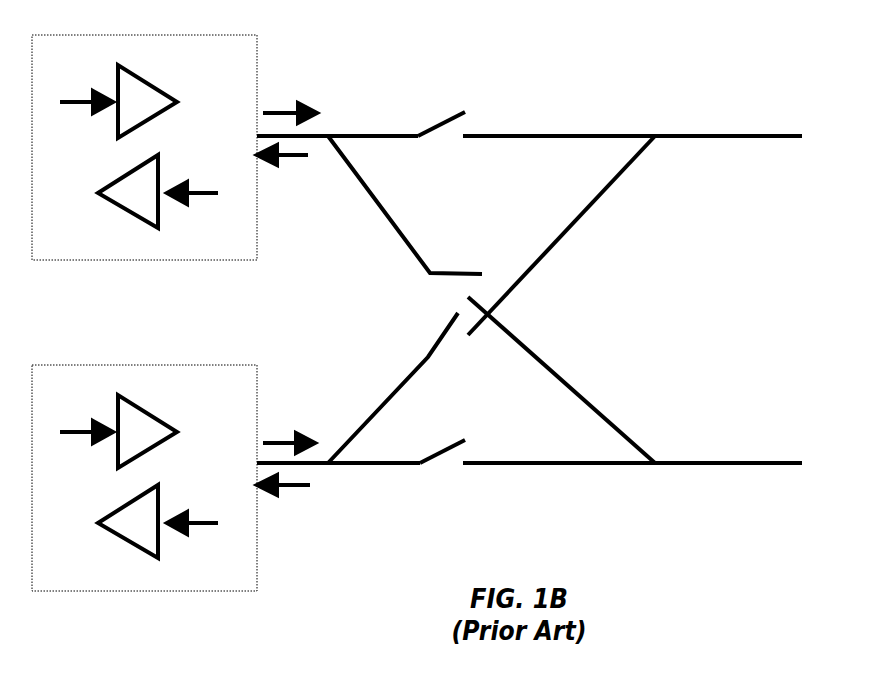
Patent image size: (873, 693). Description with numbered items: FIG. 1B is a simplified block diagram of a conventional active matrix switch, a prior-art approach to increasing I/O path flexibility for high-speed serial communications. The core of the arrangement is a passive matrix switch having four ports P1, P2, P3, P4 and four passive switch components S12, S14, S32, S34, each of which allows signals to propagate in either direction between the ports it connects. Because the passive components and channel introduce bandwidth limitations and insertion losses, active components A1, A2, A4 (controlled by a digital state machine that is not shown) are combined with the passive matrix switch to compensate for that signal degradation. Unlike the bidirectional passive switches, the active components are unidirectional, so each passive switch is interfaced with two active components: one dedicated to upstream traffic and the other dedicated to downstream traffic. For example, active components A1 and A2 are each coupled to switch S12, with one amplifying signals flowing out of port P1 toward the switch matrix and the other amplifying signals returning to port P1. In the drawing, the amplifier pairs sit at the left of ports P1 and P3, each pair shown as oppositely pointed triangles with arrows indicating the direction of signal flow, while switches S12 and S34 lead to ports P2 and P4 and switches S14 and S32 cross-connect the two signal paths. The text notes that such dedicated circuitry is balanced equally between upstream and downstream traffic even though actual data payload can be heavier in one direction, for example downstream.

The active component A1 is at (118, 101).
The active component A2 is at (139, 311).
The active component A4 is at (158, 521).
The port P1 is at (293, 113).
The port P2 is at (728, 121).
The port P3 is at (293, 492).
The port P4 is at (728, 481).
The passive switch component S12 is at (492, 109).
The passive switch component S14 is at (491, 299).
The passive switch component S32 is at (491, 299).
The passive switch component S34 is at (492, 474).